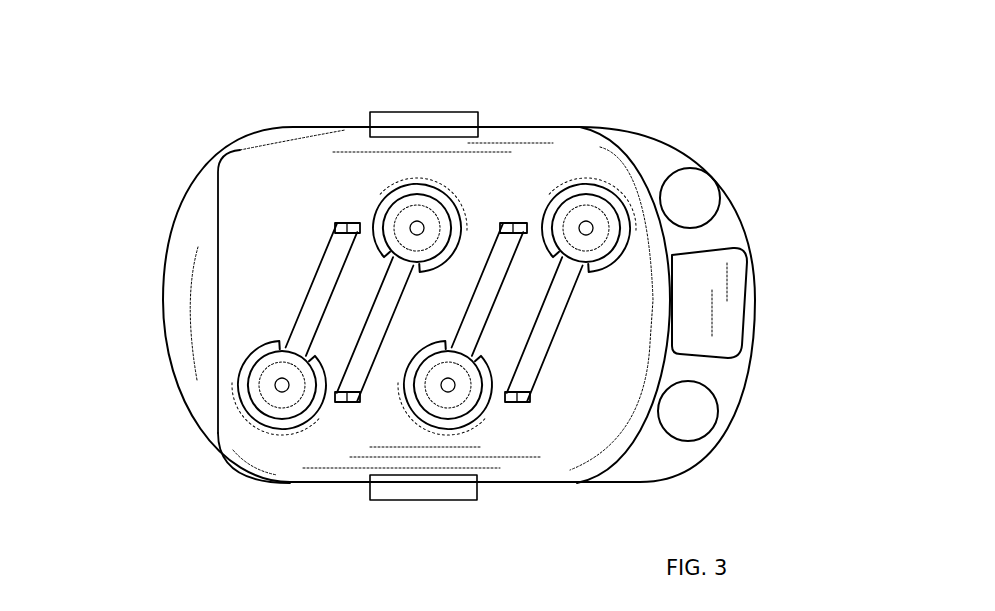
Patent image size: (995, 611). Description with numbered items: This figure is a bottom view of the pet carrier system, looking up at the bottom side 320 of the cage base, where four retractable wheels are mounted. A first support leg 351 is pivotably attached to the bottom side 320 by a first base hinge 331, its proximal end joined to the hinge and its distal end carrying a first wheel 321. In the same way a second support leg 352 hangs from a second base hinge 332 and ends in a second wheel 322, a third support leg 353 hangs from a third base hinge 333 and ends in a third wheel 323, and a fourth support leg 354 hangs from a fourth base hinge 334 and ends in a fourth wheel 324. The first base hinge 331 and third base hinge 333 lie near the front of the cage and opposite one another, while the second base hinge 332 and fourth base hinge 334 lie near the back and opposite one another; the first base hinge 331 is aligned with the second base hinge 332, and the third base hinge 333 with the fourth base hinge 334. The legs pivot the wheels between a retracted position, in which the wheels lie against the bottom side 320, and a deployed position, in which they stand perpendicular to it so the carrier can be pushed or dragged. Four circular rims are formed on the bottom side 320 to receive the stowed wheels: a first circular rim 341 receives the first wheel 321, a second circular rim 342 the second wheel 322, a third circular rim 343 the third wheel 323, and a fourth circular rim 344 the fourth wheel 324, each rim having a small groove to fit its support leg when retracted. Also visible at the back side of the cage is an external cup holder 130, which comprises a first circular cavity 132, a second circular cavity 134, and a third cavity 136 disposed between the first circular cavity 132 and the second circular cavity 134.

The external cup holder 130 is at (717, 227).
The first circular cavity 132 is at (708, 207).
The second circular cavity 134 is at (703, 415).
The third cavity 136 is at (728, 330).
The bottom side 320 is at (273, 210).
The first wheel 321 is at (427, 213).
The second wheel 322 is at (601, 221).
The third wheel 323 is at (271, 396).
The fourth wheel 324 is at (455, 398).
The first base hinge 331 is at (350, 402).
The second base hinge 332 is at (522, 402).
The third base hinge 333 is at (342, 222).
The fourth base hinge 334 is at (523, 223).
The first circular rim 341 is at (390, 190).
The second circular rim 342 is at (576, 180).
The third circular rim 343 is at (237, 368).
The fourth circular rim 344 is at (412, 401).
The first support leg 351 is at (377, 333).
The second support leg 352 is at (552, 322).
The third support leg 353 is at (317, 278).
The fourth support leg 354 is at (492, 277).